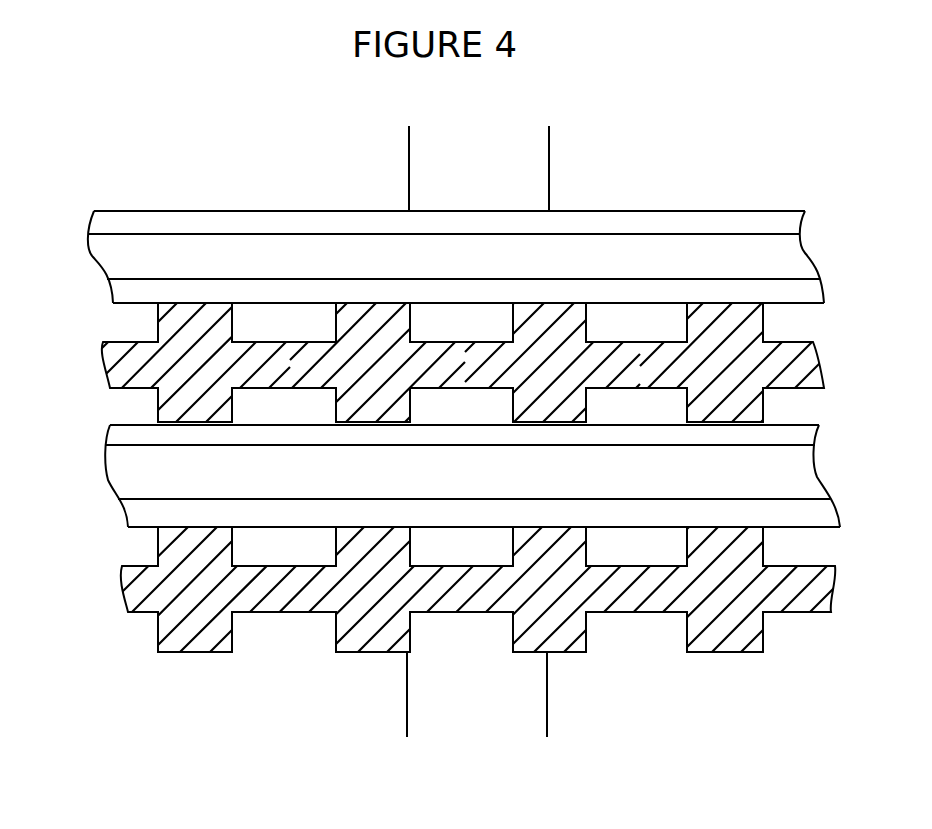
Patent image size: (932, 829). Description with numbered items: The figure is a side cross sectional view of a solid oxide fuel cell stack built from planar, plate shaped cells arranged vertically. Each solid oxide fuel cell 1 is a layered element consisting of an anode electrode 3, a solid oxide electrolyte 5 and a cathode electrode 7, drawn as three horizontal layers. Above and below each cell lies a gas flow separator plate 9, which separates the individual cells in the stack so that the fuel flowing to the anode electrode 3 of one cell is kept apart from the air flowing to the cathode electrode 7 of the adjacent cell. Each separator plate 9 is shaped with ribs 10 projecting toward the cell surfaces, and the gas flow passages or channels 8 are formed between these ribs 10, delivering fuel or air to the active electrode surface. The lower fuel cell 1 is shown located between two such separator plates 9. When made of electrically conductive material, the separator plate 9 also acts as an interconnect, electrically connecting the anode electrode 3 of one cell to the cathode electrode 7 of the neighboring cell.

The solid oxide fuel cell 1 is at (847, 210).
The anode electrode 3 is at (100, 223).
The solid oxide electrolyte 5 is at (97, 260).
The cathode electrode 7 is at (113, 297).
The gas flow passages or channels 8 is at (644, 647).
The gas flow separator plate 9 is at (847, 320).
The ribs 10 is at (157, 327).